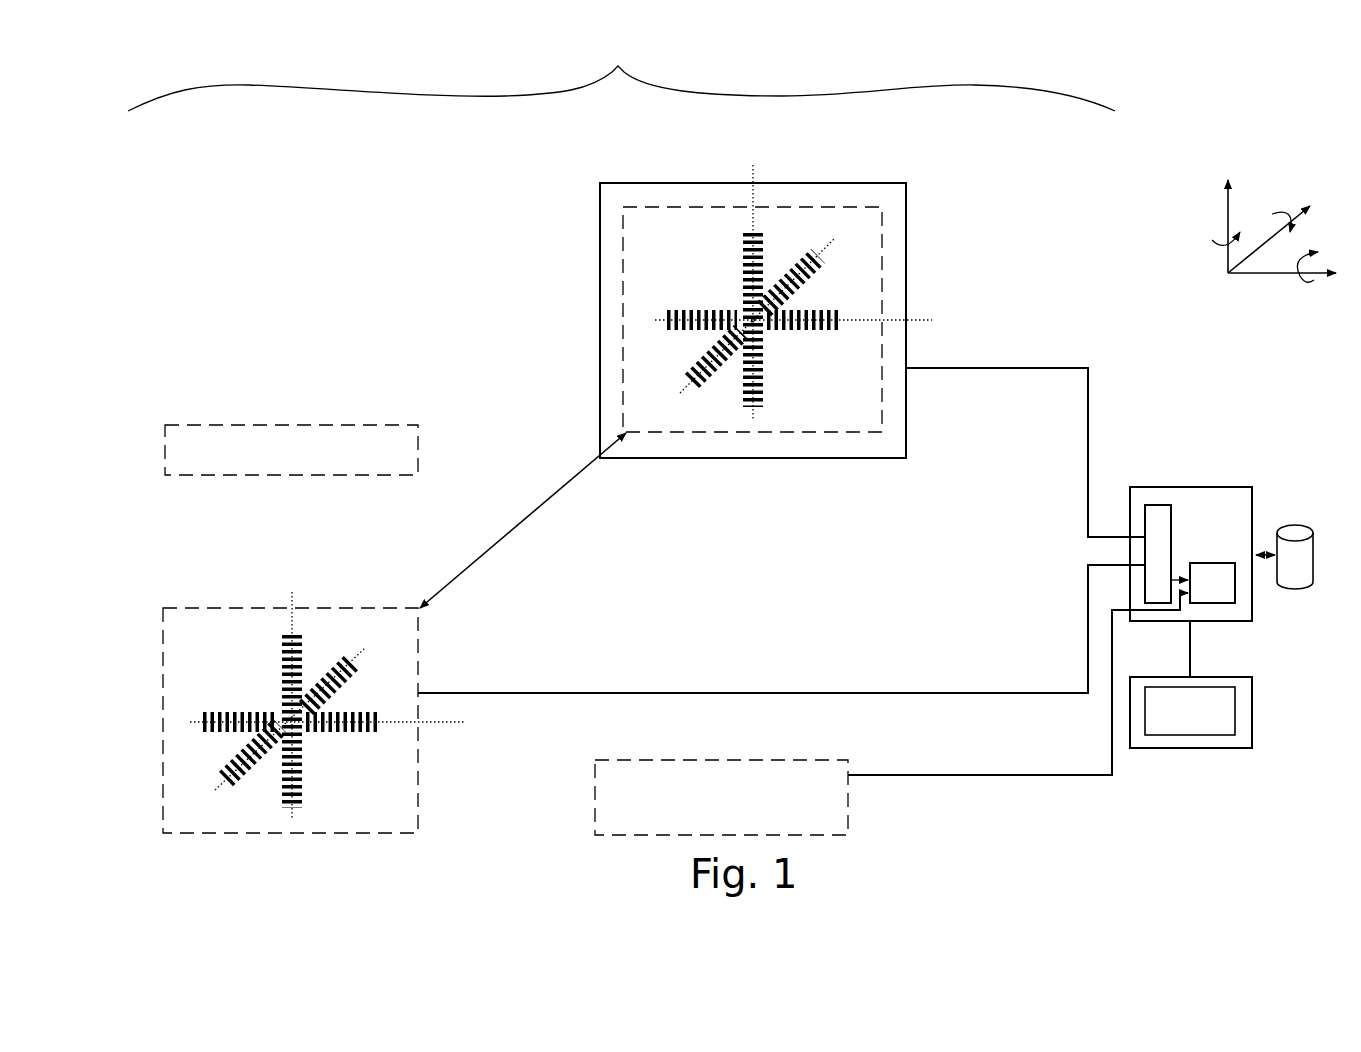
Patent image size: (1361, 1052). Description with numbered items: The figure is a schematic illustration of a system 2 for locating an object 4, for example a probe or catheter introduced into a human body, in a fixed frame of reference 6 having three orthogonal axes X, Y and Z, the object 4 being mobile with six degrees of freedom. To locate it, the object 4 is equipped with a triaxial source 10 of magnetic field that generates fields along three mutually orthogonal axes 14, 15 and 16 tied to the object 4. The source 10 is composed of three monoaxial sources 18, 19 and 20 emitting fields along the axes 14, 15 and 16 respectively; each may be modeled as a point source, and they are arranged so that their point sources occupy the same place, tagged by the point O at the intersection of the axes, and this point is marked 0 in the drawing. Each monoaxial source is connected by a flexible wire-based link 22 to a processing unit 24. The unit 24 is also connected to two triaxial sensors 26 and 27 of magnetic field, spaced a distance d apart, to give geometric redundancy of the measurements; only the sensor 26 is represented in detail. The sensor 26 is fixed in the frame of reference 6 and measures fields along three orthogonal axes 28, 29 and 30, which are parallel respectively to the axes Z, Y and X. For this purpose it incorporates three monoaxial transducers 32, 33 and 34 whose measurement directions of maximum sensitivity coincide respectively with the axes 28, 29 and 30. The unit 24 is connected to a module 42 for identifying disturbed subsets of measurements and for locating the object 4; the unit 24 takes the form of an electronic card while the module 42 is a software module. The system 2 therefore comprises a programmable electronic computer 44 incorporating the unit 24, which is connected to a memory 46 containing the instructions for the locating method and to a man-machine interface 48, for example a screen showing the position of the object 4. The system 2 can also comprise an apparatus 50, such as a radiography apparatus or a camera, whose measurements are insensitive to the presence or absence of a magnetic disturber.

The system 2 is at (621, 77).
The object 4 is at (880, 178).
The frame of reference 6 is at (1258, 288).
The triaxial source 10 is at (888, 206).
The axis 14 is at (748, 180).
The axis 15 is at (812, 250).
The axis 16 is at (935, 320).
The monoaxial source 18 is at (740, 272).
The monoaxial source 19 is at (694, 357).
The point O 0 is at (762, 330).
The monoaxial source 20 is at (827, 342).
The flexible wire-based link 22 is at (1090, 384).
The processing unit 24 is at (1160, 505).
The triaxial sensor 26 is at (158, 620).
The triaxial sensor 27 is at (158, 450).
The axis 28 is at (291, 594).
The axis 29 is at (426, 600).
The axis 30 is at (435, 724).
The monoaxial transducer 32 is at (266, 668).
The monoaxial transducer 33 is at (329, 656).
The monoaxial transducer 34 is at (334, 738).
The module 42 is at (1233, 621).
The programmable electronic computer 44 is at (1260, 501).
The memory 46 is at (1298, 568).
The man-machine interface 48 is at (1191, 712).
The apparatus 50 is at (891, 714).